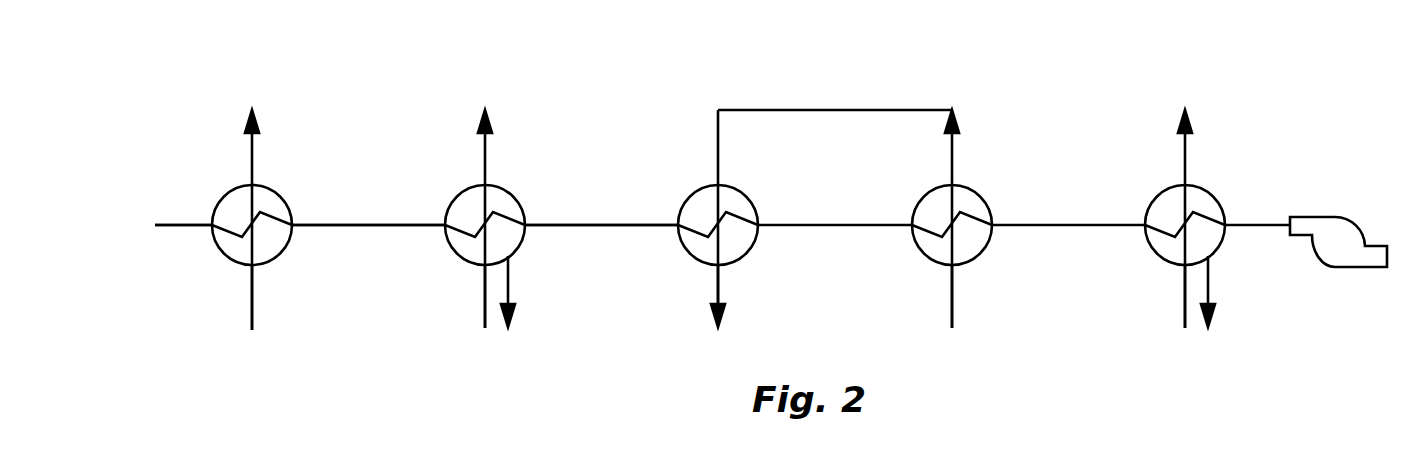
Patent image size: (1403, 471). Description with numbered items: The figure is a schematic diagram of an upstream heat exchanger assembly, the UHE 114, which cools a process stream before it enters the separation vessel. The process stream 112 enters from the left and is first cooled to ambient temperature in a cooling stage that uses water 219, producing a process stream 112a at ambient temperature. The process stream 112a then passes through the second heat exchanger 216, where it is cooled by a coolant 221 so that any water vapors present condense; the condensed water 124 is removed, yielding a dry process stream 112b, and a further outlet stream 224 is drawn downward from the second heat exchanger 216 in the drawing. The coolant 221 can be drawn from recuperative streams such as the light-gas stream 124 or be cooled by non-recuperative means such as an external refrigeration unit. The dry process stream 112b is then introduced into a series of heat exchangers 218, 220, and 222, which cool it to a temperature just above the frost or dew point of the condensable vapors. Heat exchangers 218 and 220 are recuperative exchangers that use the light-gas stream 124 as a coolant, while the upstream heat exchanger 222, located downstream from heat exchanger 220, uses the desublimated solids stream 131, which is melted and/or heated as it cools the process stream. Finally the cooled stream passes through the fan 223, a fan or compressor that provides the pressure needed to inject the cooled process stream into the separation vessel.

The upstream heat exchanger 114 is at (178, 78).
The process stream 112 is at (184, 225).
The process stream at ambient temperature 112a is at (385, 225).
The dry process stream 112b is at (617, 225).
The second heat exchanger 216 is at (453, 250).
The heat exchanger 218 is at (687, 250).
The heat exchanger 220 is at (921, 250).
The upstream heat exchanger 222 is at (1153, 250).
The water 219 is at (254, 283).
The coolant 221 is at (485, 282).
The outlet stream 224 is at (510, 282).
The light-gas stream 124 is at (720, 283).
The desublimated solids stream 131 is at (1185, 282).
The fan 223 is at (1320, 217).